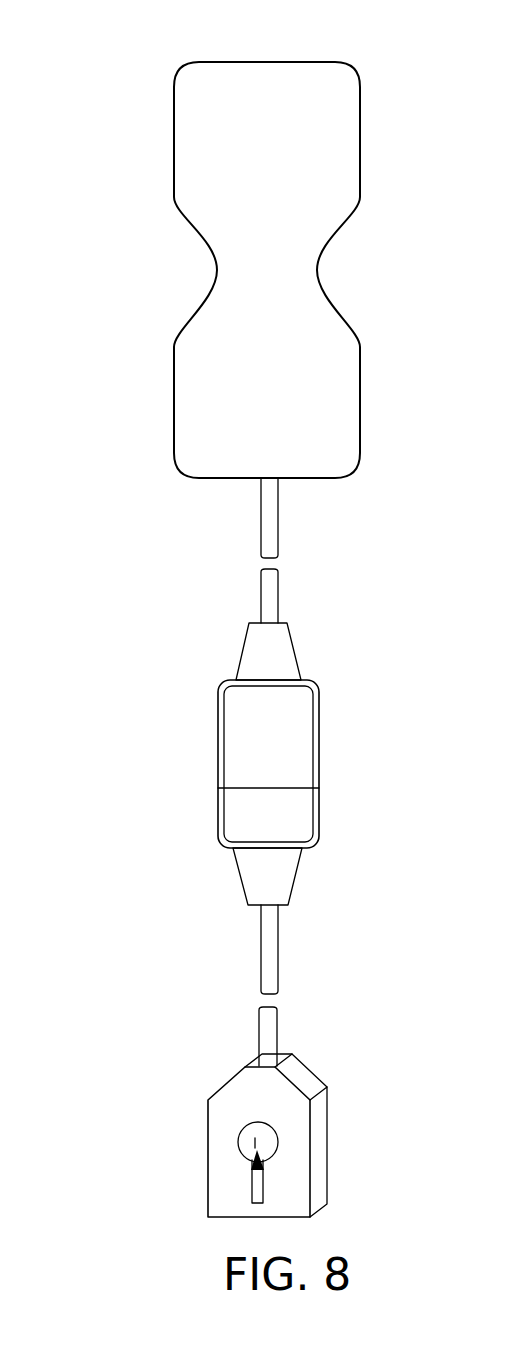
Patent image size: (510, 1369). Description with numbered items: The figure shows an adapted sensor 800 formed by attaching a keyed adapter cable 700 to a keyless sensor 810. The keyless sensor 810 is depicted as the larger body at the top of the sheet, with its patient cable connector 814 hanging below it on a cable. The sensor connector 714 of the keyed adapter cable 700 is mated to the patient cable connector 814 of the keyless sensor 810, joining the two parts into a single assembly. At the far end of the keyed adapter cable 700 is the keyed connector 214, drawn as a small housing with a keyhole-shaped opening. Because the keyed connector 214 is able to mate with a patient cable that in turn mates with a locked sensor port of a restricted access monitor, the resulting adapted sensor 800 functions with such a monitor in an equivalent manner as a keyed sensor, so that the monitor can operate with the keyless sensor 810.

The adapted sensor 800 is at (116, 112).
The keyless sensor 810 is at (358, 76).
The patient cable connector 814 is at (224, 686).
The sensor connector 714 is at (315, 842).
The keyed connector 214 is at (300, 1075).
The keyed adapter cable 700 is at (208, 1200).